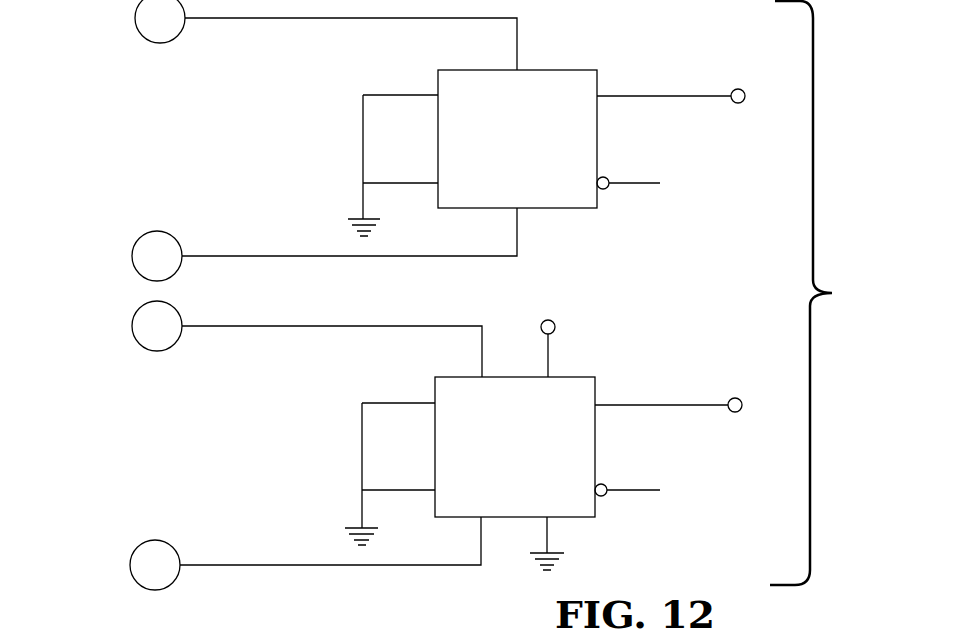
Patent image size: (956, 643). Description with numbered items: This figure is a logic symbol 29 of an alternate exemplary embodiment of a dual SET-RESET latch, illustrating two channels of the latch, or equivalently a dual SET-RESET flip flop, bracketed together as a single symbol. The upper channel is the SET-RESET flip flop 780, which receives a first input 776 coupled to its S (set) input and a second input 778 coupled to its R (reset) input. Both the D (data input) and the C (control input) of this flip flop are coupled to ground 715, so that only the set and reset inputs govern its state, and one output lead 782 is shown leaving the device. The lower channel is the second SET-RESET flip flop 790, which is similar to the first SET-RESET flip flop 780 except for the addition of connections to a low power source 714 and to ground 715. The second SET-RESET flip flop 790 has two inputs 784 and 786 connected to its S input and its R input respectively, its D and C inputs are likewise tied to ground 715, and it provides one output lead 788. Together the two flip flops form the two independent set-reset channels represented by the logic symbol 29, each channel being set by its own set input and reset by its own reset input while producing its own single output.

The logic symbol 29 is at (840, 288).
The low power source 714 is at (543, 322).
The ground 715 is at (345, 233).
The first input 776 is at (148, 42).
The second input 778 is at (148, 236).
The SET-RESET flip flop 780 is at (497, 150).
The output lead 782 is at (733, 90).
The input 784 is at (147, 349).
The input 786 is at (145, 545).
The output lead 788 is at (730, 398).
The second SET-RESET flip flop 790 is at (493, 458).